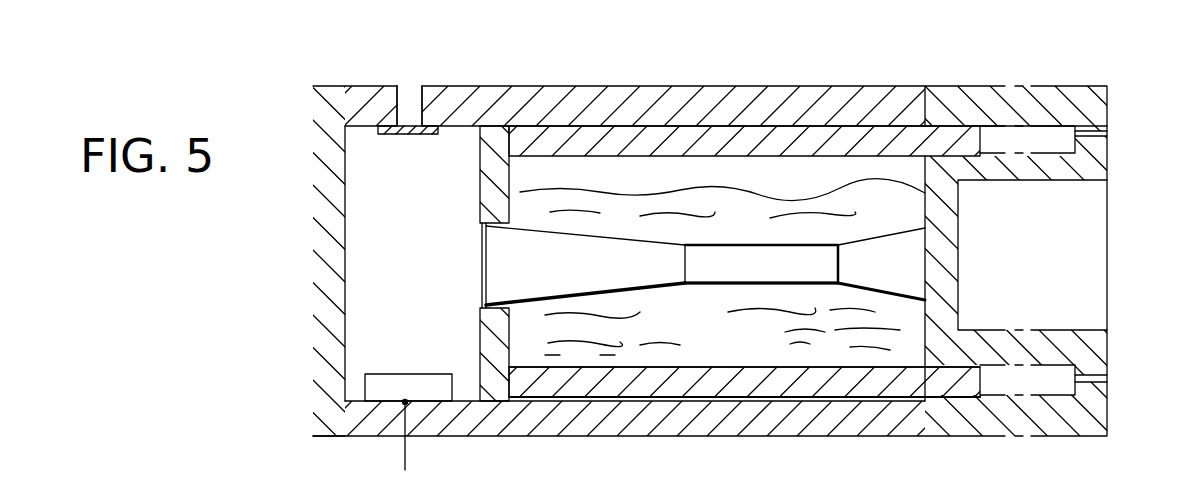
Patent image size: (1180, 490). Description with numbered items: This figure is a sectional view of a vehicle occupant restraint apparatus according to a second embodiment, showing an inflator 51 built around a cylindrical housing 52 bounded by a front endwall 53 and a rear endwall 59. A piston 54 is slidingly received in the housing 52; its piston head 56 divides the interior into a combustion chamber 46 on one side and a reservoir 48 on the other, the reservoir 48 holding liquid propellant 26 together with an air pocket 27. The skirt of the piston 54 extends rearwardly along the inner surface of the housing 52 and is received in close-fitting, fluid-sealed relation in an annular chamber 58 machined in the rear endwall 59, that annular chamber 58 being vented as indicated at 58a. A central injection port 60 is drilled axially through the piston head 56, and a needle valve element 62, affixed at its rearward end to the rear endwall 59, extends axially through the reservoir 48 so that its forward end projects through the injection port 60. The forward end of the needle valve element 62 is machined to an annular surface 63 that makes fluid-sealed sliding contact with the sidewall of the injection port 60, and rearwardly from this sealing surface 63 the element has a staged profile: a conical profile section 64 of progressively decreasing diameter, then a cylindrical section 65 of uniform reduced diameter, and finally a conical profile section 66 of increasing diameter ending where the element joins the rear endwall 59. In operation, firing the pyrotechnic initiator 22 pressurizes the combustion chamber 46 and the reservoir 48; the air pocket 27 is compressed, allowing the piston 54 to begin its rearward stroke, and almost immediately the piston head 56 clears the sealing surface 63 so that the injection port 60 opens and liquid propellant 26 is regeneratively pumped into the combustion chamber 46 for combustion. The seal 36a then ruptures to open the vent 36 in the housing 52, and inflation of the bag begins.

The pyrotechnic initiator 22 is at (428, 383).
The liquid propellant 26 is at (852, 347).
The air pocket 27 is at (645, 189).
The vent 36 is at (419, 103).
The seal 36a is at (397, 137).
The combustion chamber 46 is at (425, 284).
The reservoir 48 is at (632, 355).
The inflator 51 is at (283, 410).
The cylindrical housing 52 is at (787, 93).
The front endwall 53 is at (318, 248).
The piston 54 is at (452, 198).
The piston head 56 is at (492, 150).
The annular chamber 58 is at (744, 146).
The vent of annular chamber 58a is at (1107, 134).
The rear endwall 59 is at (945, 278).
The central injection port 60 is at (497, 292).
The needle valve element 62 is at (707, 285).
The annular surface 63 is at (487, 250).
The conical profile section 64 is at (602, 281).
The cylindrical section 65 is at (770, 276).
The conical profile section 66 is at (900, 276).